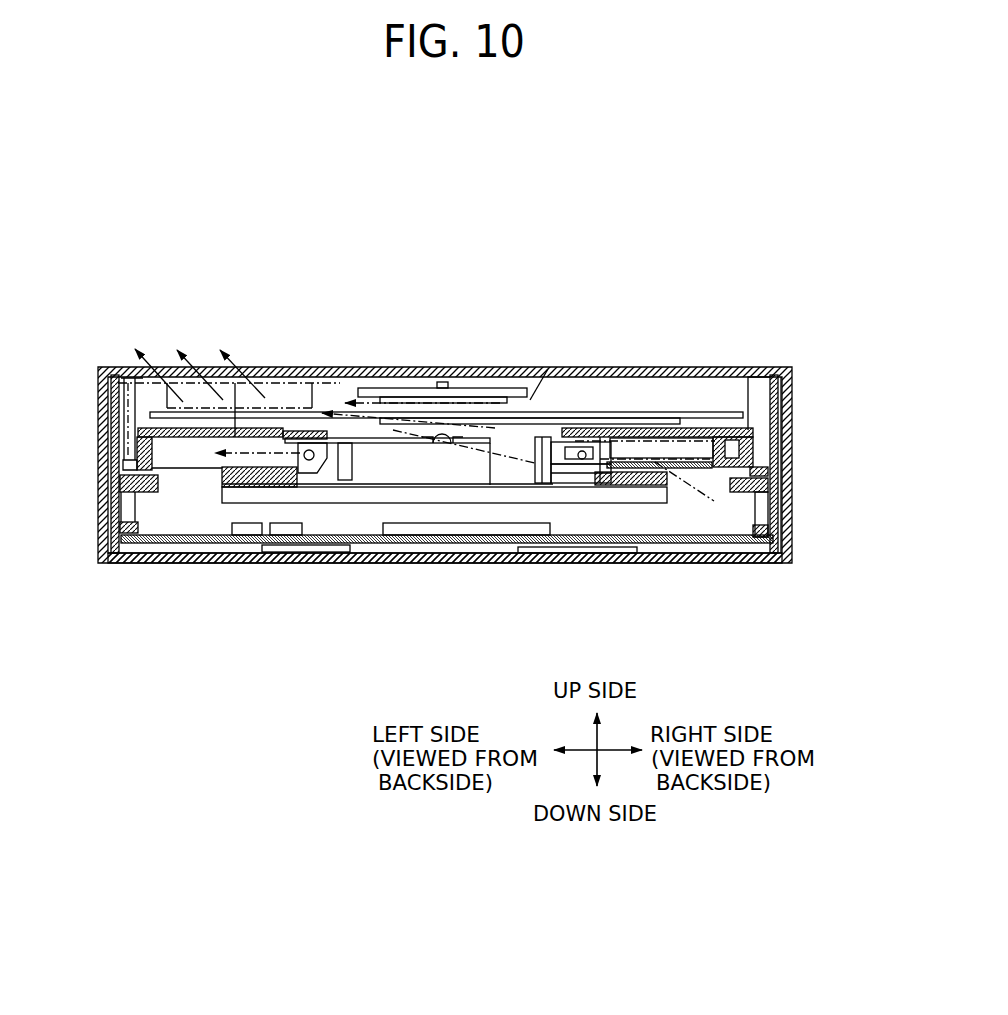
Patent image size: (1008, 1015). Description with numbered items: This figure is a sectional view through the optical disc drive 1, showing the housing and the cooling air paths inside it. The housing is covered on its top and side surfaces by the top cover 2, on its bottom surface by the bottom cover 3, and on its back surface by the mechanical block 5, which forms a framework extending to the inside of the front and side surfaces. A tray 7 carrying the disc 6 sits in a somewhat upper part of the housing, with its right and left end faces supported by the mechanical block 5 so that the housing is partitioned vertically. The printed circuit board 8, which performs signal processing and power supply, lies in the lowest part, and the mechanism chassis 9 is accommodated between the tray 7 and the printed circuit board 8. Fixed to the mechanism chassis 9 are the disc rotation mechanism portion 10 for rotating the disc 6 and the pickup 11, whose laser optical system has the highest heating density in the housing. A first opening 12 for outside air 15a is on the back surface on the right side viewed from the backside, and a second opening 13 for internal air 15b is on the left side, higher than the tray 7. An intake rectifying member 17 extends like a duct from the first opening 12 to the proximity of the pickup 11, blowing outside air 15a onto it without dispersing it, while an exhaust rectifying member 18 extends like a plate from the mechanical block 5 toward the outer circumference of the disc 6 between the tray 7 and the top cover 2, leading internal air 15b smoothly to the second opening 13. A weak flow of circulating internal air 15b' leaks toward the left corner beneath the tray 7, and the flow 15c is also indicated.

The optical disc drive 1 is at (419, 241).
The top cover 2 is at (597, 368).
The bottom cover 3 is at (238, 560).
The mechanical block 5 is at (766, 392).
The disc 6 is at (593, 413).
The tray 7 is at (620, 428).
The printed circuit board 8 is at (645, 548).
The mechanism chassis 9 is at (617, 487).
The disc rotation mechanism portion 10 is at (423, 397).
The pickup 11 is at (427, 458).
The first opening 12 is at (745, 440).
The second opening 13 is at (295, 383).
The outside air 15a is at (712, 500).
The internal air 15b is at (428, 378).
The circulating internal air 15b' is at (191, 550).
The laser beam 15c is at (168, 381).
The intake rectifying member 17 is at (735, 455).
The exhaust rectifying member 18 is at (127, 404).